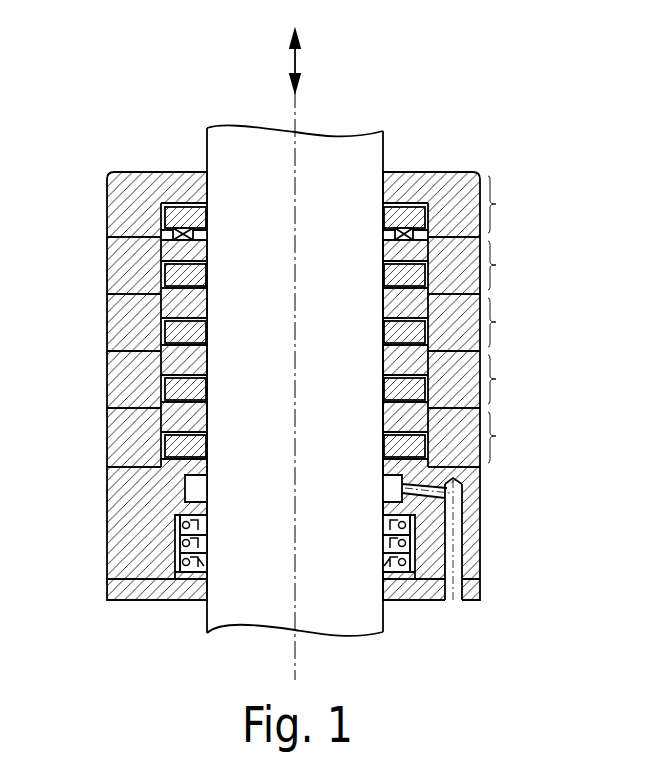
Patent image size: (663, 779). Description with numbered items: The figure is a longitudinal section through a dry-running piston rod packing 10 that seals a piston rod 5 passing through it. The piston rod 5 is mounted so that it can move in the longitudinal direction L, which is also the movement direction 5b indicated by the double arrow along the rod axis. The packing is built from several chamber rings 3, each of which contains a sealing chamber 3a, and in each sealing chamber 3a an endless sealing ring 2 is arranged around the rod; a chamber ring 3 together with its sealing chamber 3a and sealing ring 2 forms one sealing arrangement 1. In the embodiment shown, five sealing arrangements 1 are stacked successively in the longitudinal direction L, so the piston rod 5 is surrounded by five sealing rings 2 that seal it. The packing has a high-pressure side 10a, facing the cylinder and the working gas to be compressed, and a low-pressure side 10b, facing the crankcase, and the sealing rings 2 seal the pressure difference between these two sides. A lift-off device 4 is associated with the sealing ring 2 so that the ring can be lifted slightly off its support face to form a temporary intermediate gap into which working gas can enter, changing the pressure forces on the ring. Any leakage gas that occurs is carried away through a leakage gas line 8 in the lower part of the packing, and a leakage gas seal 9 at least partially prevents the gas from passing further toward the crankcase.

The sealing arrangement 1 is at (500, 319).
The sealing ring 2 is at (395, 222).
The chamber ring 3 is at (122, 186).
The sealing chamber 3a is at (193, 204).
The lift-off device 4 is at (162, 221).
The piston rod 5 is at (235, 145).
The movement direction 5b is at (296, 60).
The leakage gas line 8 is at (453, 537).
The leakage gas seal 9 is at (178, 518).
The piston rod packing 10 is at (135, 139).
The high-pressure side 10a is at (487, 89).
The low-pressure side 10b is at (477, 644).
The longitudinal direction L is at (292, 602).